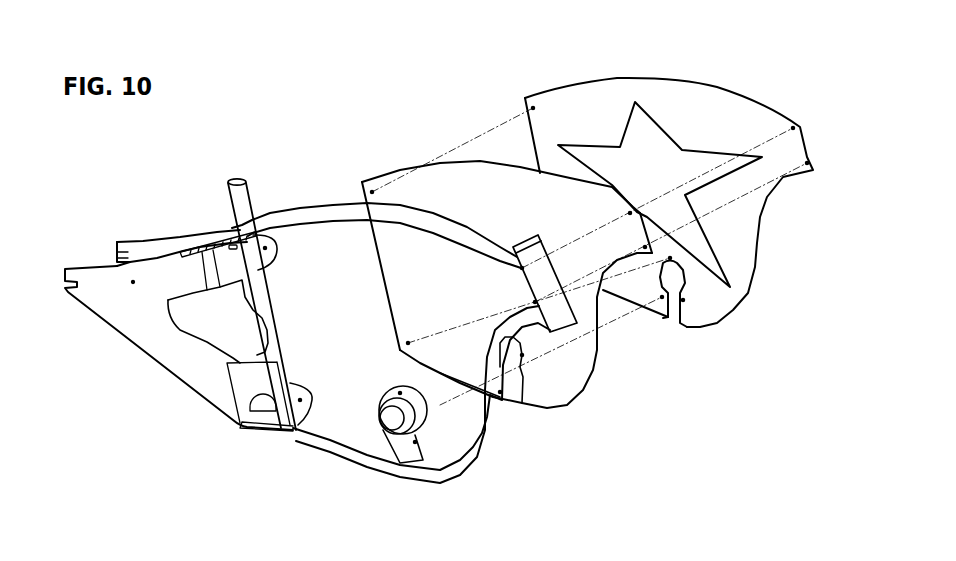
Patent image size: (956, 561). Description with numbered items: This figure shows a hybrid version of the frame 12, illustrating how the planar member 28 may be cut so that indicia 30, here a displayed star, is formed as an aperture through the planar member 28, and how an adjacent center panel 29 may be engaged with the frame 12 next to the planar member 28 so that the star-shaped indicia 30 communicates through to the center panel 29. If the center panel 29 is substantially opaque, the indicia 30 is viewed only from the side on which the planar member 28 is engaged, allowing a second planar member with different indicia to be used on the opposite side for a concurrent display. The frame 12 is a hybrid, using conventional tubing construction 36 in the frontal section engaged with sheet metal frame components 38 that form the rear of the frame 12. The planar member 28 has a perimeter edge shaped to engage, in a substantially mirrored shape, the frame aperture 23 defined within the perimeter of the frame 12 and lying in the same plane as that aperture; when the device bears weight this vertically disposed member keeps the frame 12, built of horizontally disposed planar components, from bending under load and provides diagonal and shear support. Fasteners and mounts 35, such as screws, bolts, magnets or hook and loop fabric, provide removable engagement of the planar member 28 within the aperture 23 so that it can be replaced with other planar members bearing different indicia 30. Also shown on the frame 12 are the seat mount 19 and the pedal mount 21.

The frame 12 is at (326, 212).
The seat mount 19 is at (229, 181).
The pedal mount 21 is at (383, 432).
The frame aperture 23 is at (328, 327).
The planar member 28 is at (565, 122).
The center panel 29 is at (457, 183).
The indicia 30 is at (650, 173).
The fasteners and mounts 35 is at (273, 256).
The tubing construction 36 is at (497, 437).
The sheet metal frame components 38 is at (166, 330).